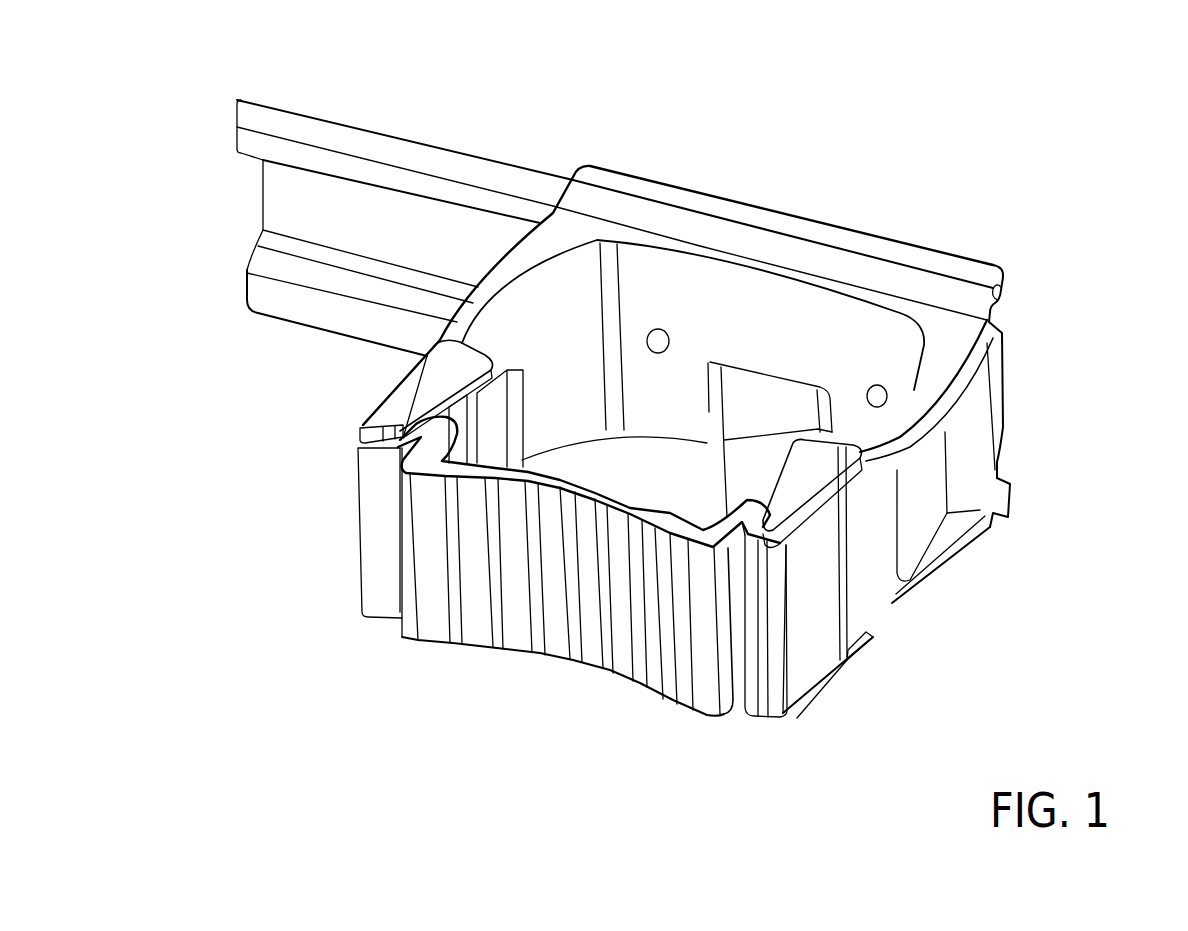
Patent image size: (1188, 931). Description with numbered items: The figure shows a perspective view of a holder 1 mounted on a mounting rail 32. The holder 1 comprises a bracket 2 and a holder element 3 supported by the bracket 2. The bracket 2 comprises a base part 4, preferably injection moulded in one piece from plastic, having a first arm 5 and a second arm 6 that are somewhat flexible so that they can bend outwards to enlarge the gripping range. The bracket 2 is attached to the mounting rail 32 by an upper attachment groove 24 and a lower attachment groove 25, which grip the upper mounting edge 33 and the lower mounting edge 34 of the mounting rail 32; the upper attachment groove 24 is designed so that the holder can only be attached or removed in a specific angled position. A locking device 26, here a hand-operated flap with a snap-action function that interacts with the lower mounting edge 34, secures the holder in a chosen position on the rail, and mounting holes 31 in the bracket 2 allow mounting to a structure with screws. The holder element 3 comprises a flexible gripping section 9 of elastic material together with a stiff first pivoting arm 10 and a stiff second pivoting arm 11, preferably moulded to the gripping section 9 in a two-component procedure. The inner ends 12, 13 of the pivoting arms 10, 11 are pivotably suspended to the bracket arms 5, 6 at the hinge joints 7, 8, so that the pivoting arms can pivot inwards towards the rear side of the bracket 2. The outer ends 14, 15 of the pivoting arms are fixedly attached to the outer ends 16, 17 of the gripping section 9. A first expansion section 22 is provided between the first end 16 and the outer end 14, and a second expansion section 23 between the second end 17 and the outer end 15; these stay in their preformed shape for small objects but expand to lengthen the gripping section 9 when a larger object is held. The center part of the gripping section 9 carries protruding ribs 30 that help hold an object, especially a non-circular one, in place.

The holder 1 is at (1059, 167).
The bracket 2 is at (998, 530).
The holder element 3 is at (668, 727).
The base part 4 is at (998, 393).
The first arm 5 is at (893, 597).
The second arm 6 is at (530, 257).
The hinge joint 7 is at (891, 646).
The hinge joint 8 is at (386, 353).
The flexible gripping section 9 is at (548, 672).
The first pivoting arm 10 is at (797, 497).
The second pivoting arm 11 is at (387, 410).
The inner end of first pivoting arm 12 is at (864, 664).
The inner end of second pivoting arm 13 is at (388, 372).
The outer end of first pivoting arm 14 is at (804, 720).
The outer end of second pivoting arm 15 is at (350, 435).
The first end of gripping section 16 is at (718, 724).
The second end of gripping section 17 is at (368, 628).
The first expansion section 22 is at (747, 724).
The second expansion section 23 is at (396, 634).
The upper attachment groove 24 is at (1008, 316).
The lower attachment groove 25 is at (1018, 468).
The locking device 26 is at (773, 410).
The protruding ribs 30 is at (607, 667).
The mounting holes 31 is at (660, 338).
The mounting rail 32 is at (402, 233).
The upper mounting edge 33 is at (297, 128).
The lower mounting edge 34 is at (262, 302).